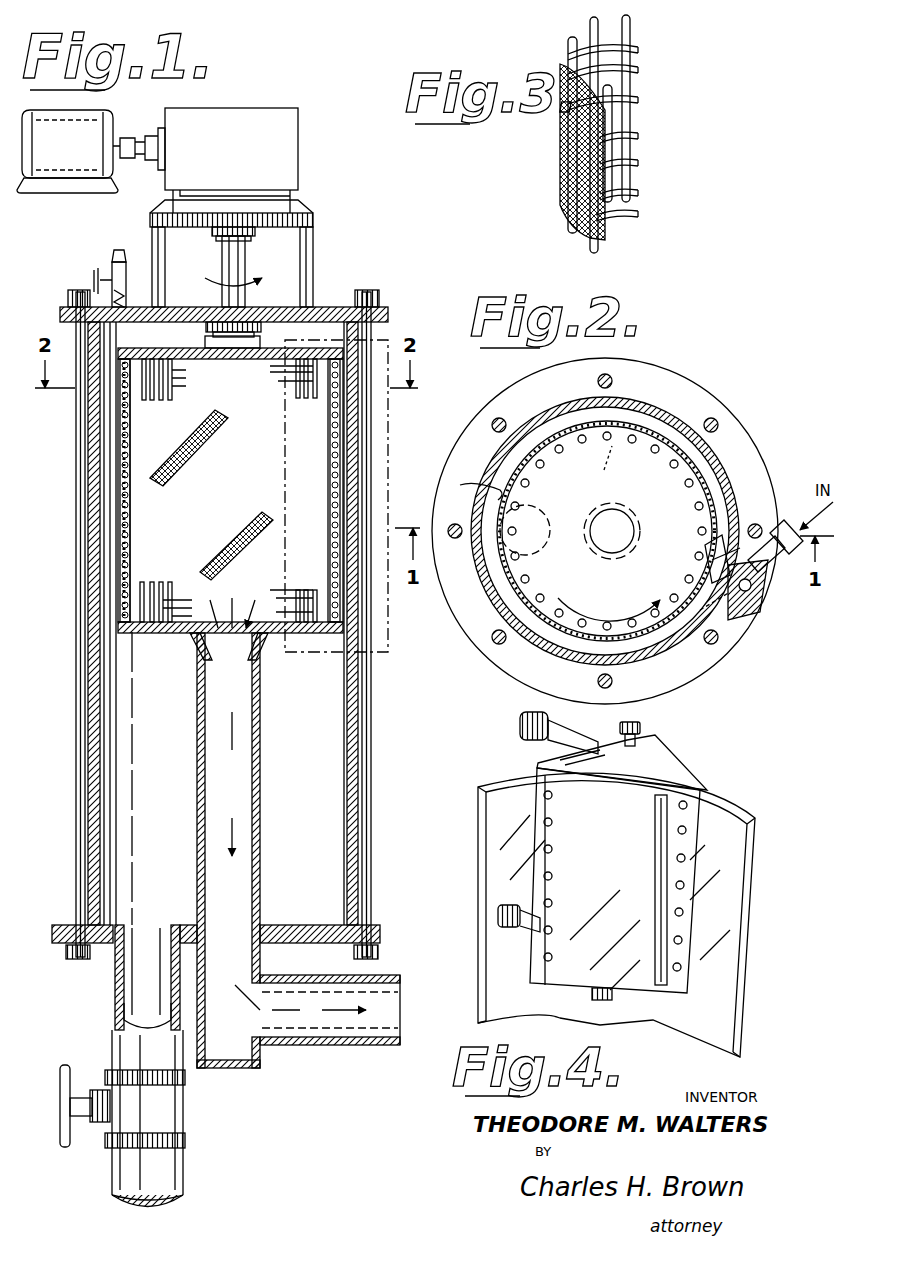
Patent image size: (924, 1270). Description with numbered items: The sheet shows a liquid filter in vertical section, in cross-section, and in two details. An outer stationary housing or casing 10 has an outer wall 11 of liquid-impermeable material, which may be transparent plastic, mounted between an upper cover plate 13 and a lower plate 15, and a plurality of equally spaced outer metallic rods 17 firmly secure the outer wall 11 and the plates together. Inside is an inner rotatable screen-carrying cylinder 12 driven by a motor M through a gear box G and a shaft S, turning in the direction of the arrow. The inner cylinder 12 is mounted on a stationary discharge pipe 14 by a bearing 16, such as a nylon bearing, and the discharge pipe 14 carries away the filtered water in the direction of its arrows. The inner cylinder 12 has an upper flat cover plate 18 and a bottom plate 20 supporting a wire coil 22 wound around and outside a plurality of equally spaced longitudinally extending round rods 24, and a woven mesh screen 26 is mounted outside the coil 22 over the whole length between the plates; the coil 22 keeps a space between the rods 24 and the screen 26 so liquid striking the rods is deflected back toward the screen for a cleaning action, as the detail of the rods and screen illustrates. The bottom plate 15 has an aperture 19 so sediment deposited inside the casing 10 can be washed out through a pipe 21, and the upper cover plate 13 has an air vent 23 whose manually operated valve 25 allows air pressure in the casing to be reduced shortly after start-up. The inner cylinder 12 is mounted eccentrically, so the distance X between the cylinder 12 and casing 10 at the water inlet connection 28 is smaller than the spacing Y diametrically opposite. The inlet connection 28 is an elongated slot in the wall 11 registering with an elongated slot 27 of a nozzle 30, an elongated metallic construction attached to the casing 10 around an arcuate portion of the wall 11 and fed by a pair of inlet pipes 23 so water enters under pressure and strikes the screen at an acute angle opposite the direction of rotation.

In FIG. 1, the motor M is at (66, 182).
In FIG. 1, the gear box G is at (200, 108).
In FIG. 1, the shaft S is at (222, 252).
In FIG. 1, the outer stationary housing or casing 10 is at (100, 758).
In FIG. 1, the outer wall 11 is at (100, 826).
In FIG. 2, the outer wall 11 is at (674, 420).
In FIG. 4, the outer wall 11 is at (753, 872).
In FIG. 1, the inner rotatable screen carrying chamber or cylinder 12 is at (118, 556).
In FIG. 1, the upper cover plate 13 is at (320, 307).
In FIG. 1, the stationary discharge pipe 14 is at (260, 706).
In FIG. 2, the stationary discharge pipe 14 is at (598, 545).
In FIG. 1, the lower plate 15 is at (268, 925).
In FIG. 2, the lower plate 15 is at (660, 372).
In FIG. 1, the bearing 16 is at (200, 645).
In FIG. 1, the outer metallic rods 17 is at (76, 820).
In FIG. 2, the outer metallic rods 17 is at (496, 420).
In FIG. 1, the upper flat cover plate 18 is at (176, 348).
In FIG. 1, the aperture 19 is at (148, 938).
In FIG. 2, the aperture 19 is at (545, 535).
In FIG. 1, the bottom plate 20 is at (148, 634).
In FIG. 1, the pipe 21 is at (114, 992).
In FIG. 1, the wire coil 22 is at (290, 372).
In FIG. 3, the wire coil 22 is at (640, 50).
In FIG. 2, the wire coil 22 is at (578, 440).
In FIG. 1, the air vent / inlet pipes 23 is at (128, 300).
In FIG. 2, the air vent / inlet pipes 23 is at (790, 520).
In FIG. 4, the air vent / inlet pipes 23 is at (522, 724).
In FIG. 1, the longitudinally extending round rods 24 is at (118, 465).
In FIG. 3, the longitudinally extending round rods 24 is at (585, 26).
In FIG. 2, the longitudinally extending round rods 24 is at (634, 442).
In FIG. 1, the manually operated valve 25 is at (94, 270).
In FIG. 1, the woven mesh screen 26 is at (118, 485).
In FIG. 3, the woven mesh screen 26 is at (560, 155).
In FIG. 2, the woven mesh screen 26 is at (700, 464).
In FIG. 2, the elongated slot 27 is at (720, 555).
In FIG. 4, the elongated slot 27 is at (654, 832).
In FIG. 2, the water inlet connection 28 is at (716, 572).
In FIG. 4, the water inlet connection 28 is at (652, 926).
In FIG. 1, the nozzle 30 is at (386, 462).
In FIG. 2, the nozzle 30 is at (745, 612).
In FIG. 4, the nozzle 30 is at (530, 760).
In FIG. 2, the distance X is at (700, 612).
In FIG. 2, the spacing Y is at (471, 483).